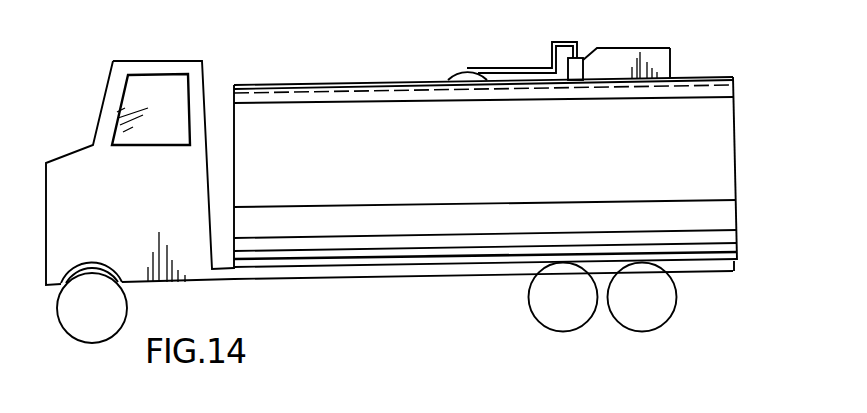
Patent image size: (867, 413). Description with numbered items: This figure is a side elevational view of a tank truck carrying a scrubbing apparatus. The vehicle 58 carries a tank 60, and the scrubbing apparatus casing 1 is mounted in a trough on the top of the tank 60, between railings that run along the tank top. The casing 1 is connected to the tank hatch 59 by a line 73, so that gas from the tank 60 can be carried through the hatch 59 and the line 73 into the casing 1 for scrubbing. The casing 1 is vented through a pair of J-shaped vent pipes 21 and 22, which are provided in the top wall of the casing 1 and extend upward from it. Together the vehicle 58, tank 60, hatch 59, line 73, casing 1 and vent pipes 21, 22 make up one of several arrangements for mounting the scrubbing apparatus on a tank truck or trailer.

The casing 1 is at (671, 39).
The vent pipe 21 is at (630, 48).
The vent pipe 22 is at (631, 39).
The vehicle 58 is at (180, 60).
The hatch 59 is at (459, 71).
The tank 60 is at (477, 165).
The line 73 is at (555, 43).